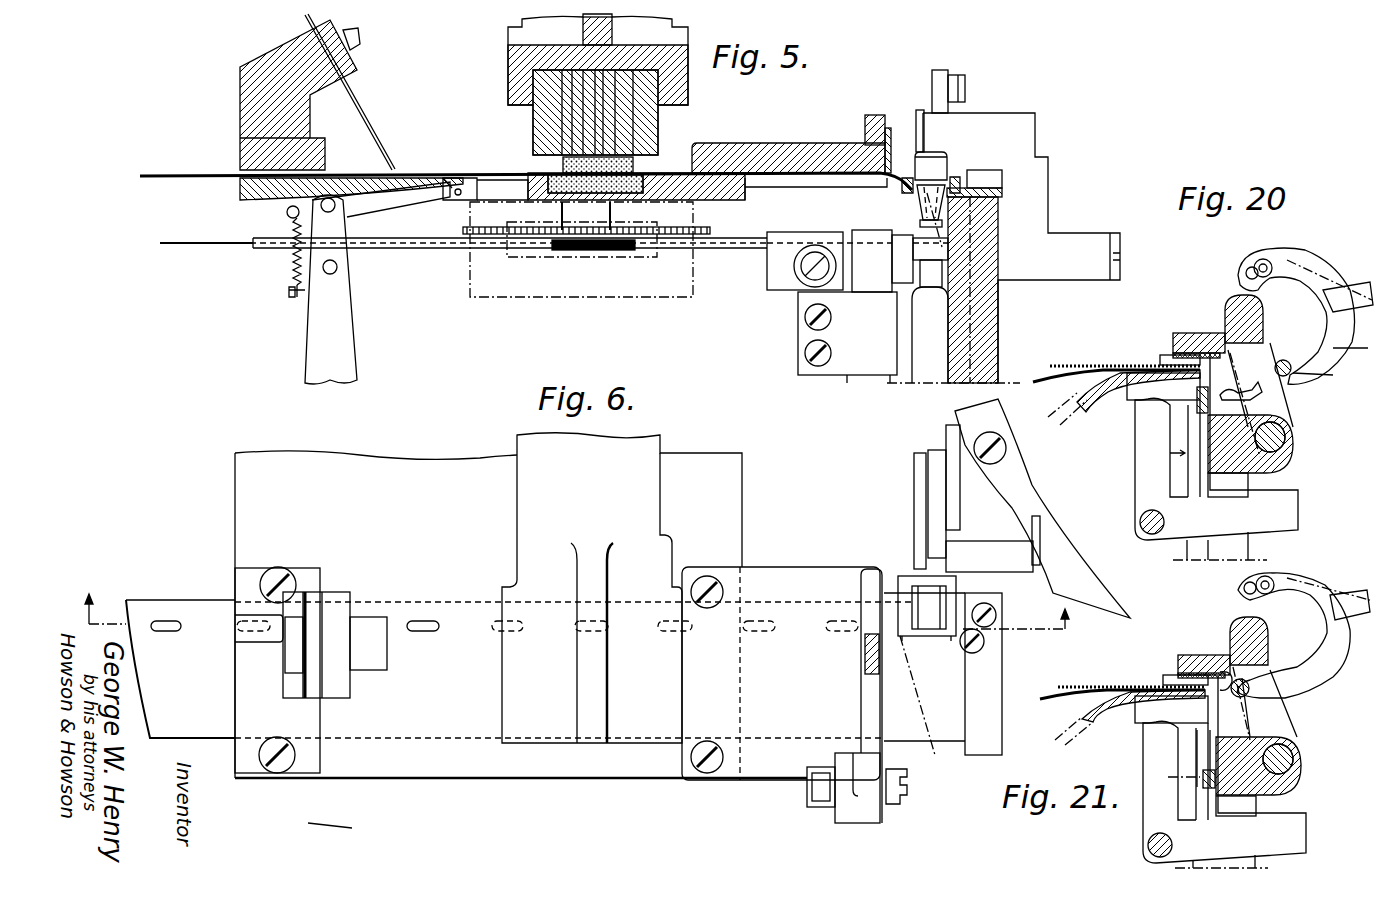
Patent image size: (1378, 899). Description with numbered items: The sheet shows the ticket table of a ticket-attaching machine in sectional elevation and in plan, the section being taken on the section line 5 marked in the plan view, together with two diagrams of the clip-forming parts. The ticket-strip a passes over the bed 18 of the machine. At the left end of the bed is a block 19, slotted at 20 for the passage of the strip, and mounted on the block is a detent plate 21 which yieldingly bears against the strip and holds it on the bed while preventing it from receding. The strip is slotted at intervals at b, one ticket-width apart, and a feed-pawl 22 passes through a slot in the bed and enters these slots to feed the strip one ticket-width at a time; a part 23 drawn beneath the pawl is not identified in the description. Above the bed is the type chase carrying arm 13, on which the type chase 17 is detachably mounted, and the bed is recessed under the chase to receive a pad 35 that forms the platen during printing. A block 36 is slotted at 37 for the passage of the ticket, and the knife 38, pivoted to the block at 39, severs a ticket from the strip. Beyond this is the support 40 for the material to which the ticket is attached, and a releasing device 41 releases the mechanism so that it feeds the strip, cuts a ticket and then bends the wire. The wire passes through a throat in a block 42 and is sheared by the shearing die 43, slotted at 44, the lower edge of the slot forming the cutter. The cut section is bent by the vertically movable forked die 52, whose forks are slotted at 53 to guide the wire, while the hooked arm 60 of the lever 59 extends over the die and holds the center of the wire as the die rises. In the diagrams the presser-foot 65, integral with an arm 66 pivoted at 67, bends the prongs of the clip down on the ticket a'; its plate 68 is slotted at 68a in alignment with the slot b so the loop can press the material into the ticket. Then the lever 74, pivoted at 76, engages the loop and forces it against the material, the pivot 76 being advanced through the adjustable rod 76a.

In FIG. 6, the section line 5 is at (577, 601).
In FIG. 5, the type chase carrying arm 13 is at (598, 84).
In FIG. 6, the type chase carrying arm 13 is at (622, 588).
In FIG. 5, the type chase 17 is at (533, 124).
In FIG. 5, the bed 18 is at (240, 187).
In FIG. 6, the bed 18 is at (484, 754).
In FIG. 5, the block 19 is at (247, 112).
In FIG. 6, the block 19 is at (277, 670).
In FIG. 5, the slot 20 is at (232, 168).
In FIG. 5, the detent plate 21 is at (380, 133).
In FIG. 6, the detent plate 21 is at (335, 645).
In FIG. 5, the feed-pawl 22 is at (388, 205).
In FIG. 5, the lever 23 is at (322, 289).
In FIG. 5, the pad 35 is at (632, 202).
In FIG. 5, the block 36 is at (820, 141).
In FIG. 6, the block 36 is at (781, 673).
In FIG. 5, the slot 37 is at (753, 187).
In FIG. 6, the knife 38 is at (886, 759).
In FIG. 5, the pivot 39 is at (865, 125).
In FIG. 6, the support 40 is at (990, 683).
In FIG. 20, the support 40 is at (1124, 397).
In FIG. 21, the support 40 is at (1130, 717).
In FIG. 6, the releasing device 41 is at (1042, 508).
In FIG. 5, the block 42 is at (836, 238).
In FIG. 5, the shearing die 43 is at (829, 261).
In FIG. 5, the slot 44 is at (865, 240).
In FIG. 5, the forked die 52 is at (953, 290).
In FIG. 20, the forked die 52 is at (1203, 485).
In FIG. 21, the forked die 52 is at (1256, 800).
In FIG. 5, the slots 53 is at (910, 277).
In FIG. 21, the slots 53 is at (1210, 740).
In FIG. 20, the lever 59 is at (1203, 534).
In FIG. 21, the lever 59 is at (1208, 846).
In FIG. 20, the hooked arm 60 is at (1150, 422).
In FIG. 21, the hooked arm 60 is at (1157, 748).
In FIG. 5, the presser-foot 65 is at (943, 163).
In FIG. 6, the presser-foot 65 is at (925, 590).
In FIG. 20, the presser-foot 65 is at (1202, 332).
In FIG. 21, the presser-foot 65 is at (1212, 657).
In FIG. 20, the arm 66 is at (1277, 400).
In FIG. 21, the arm 66 is at (1288, 713).
In FIG. 20, the pivot 67 is at (1293, 433).
In FIG. 21, the pivot 67 is at (1301, 755).
In FIG. 5, the plate 68 is at (952, 185).
In FIG. 6, the plate 68 is at (898, 583).
In FIG. 20, the plate 68 is at (1157, 358).
In FIG. 21, the plate 68 is at (1163, 679).
In FIG. 6, the slot 68a is at (924, 632).
In FIG. 20, the slot 68a is at (1167, 357).
In FIG. 21, the slot 68a is at (1175, 673).
In FIG. 20, the lever 74 is at (1305, 316).
In FIG. 21, the lever 74 is at (1318, 660).
In FIG. 20, the pivot 76 is at (1307, 385).
In FIG. 21, the pivot 76 is at (1254, 685).
In FIG. 20, the adjustable rod 76a is at (1331, 365).
In FIG. 21, the adjustable rod 76a is at (1317, 692).
In FIG. 5, the ticket-strip a is at (526, 167).
In FIG. 6, the ticket-strip a is at (520, 669).
In FIG. 20, the ticket-strip a is at (1209, 333).
In FIG. 20, the ticket a' is at (1116, 362).
In FIG. 21, the ticket a' is at (1122, 681).
In FIG. 5, the slot b is at (445, 171).
In FIG. 6, the slot b is at (188, 633).